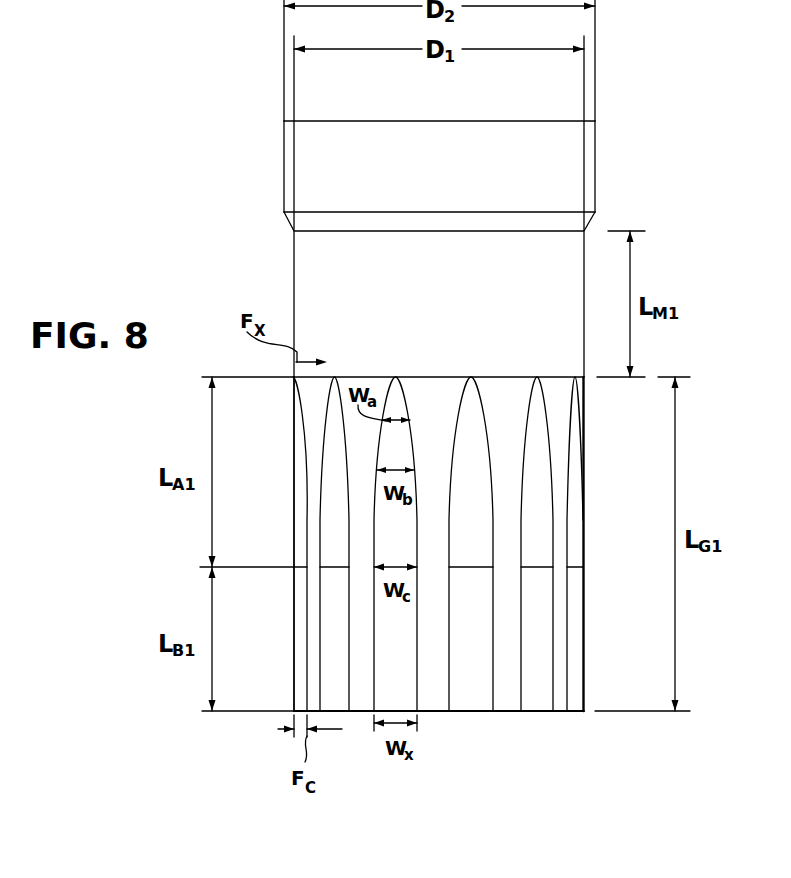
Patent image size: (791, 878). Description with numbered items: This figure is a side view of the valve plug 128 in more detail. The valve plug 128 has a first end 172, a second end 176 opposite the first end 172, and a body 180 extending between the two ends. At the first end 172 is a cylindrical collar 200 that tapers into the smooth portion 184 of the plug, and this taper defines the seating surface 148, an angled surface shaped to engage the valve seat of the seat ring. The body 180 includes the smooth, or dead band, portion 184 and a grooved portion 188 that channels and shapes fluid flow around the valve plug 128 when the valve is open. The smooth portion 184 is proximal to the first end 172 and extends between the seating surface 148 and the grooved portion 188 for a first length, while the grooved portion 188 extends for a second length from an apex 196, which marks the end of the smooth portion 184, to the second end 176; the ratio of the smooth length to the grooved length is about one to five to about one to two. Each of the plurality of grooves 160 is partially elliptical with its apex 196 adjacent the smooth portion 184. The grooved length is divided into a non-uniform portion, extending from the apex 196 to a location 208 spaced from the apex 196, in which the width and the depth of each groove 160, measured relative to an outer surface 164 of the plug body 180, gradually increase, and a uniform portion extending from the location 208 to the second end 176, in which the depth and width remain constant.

The valve plug 128 is at (232, 119).
The seating surface 148 is at (313, 222).
The grooves 160 is at (408, 680).
The outer surface 164 is at (294, 664).
The first end 172 is at (492, 121).
The second end 176 is at (566, 714).
The body 180 is at (302, 272).
The smooth portion 184 is at (568, 265).
The grooved portion 188 is at (575, 635).
The apex 196 is at (396, 377).
The cylindrical collar 200 is at (543, 137).
The location 208 is at (420, 566).